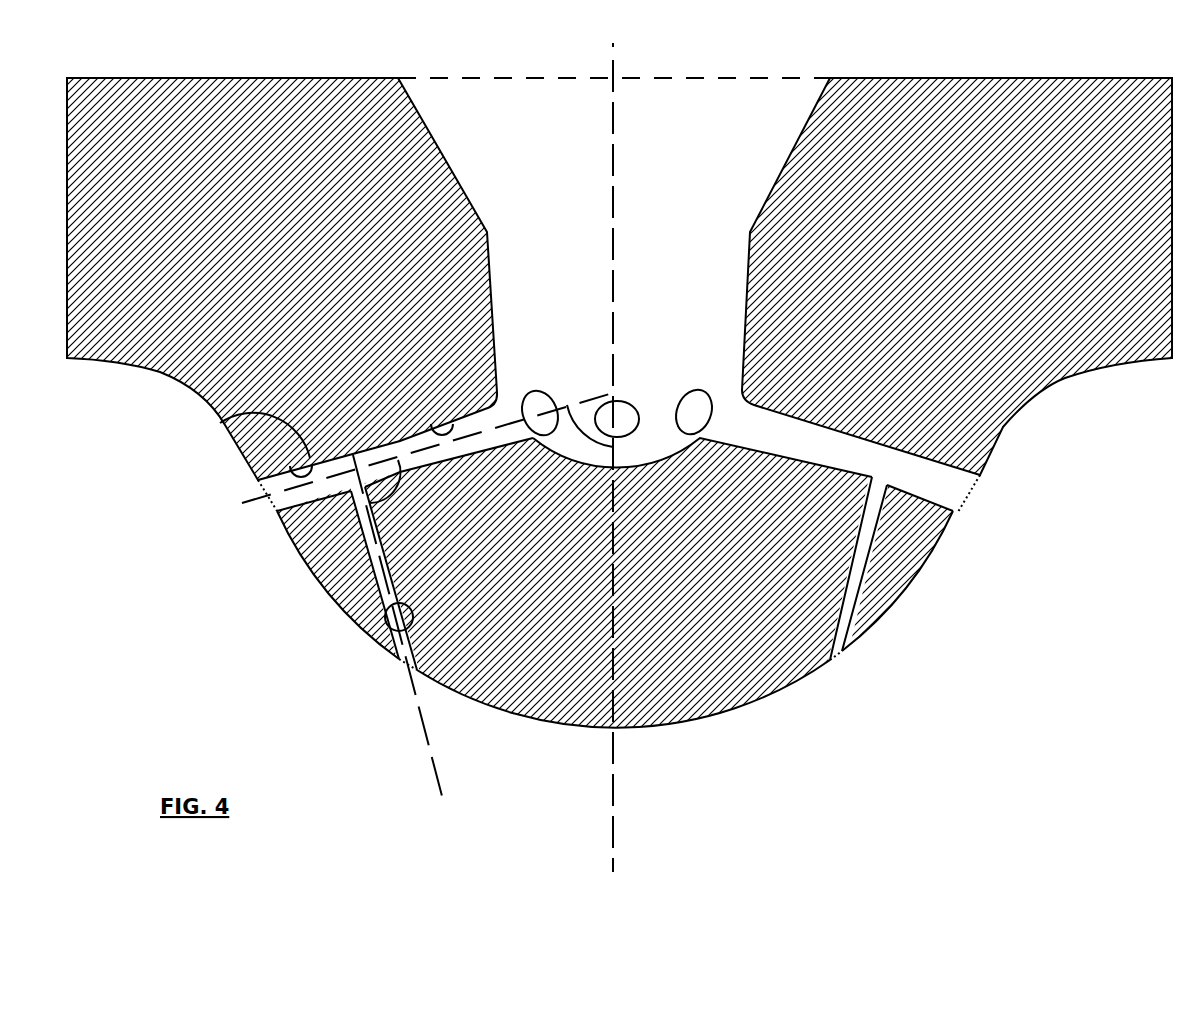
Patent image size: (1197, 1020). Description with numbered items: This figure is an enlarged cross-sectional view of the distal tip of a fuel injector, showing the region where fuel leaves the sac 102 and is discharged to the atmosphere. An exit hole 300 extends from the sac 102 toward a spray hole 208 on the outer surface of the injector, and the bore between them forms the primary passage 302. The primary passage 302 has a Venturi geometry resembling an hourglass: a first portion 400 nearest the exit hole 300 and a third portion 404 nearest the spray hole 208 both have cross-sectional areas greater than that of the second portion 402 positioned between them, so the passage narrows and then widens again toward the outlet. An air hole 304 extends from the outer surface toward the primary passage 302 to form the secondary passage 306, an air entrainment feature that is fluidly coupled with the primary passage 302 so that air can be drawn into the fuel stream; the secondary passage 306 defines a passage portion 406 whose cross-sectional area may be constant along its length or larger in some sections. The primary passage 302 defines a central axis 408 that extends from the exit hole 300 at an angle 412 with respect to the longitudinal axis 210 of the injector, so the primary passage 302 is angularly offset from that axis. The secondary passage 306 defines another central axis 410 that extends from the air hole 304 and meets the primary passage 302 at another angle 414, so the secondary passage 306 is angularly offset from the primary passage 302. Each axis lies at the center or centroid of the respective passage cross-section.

The sac 102 is at (685, 290).
The spray hole 208 is at (217, 508).
The longitudinal axis 210 is at (613, 782).
The exit hole 300 is at (700, 432).
The primary passage 302 is at (352, 440).
The air hole 304 is at (390, 706).
The secondary passage 306 is at (373, 567).
The first portion 400 is at (404, 450).
The second portion 402 is at (348, 482).
The third portion 404 is at (222, 424).
The passage portion 406 is at (385, 633).
The central axis 408 is at (500, 427).
The central axis 410 is at (435, 762).
The angle 412 is at (588, 440).
The angle 414 is at (552, 380).